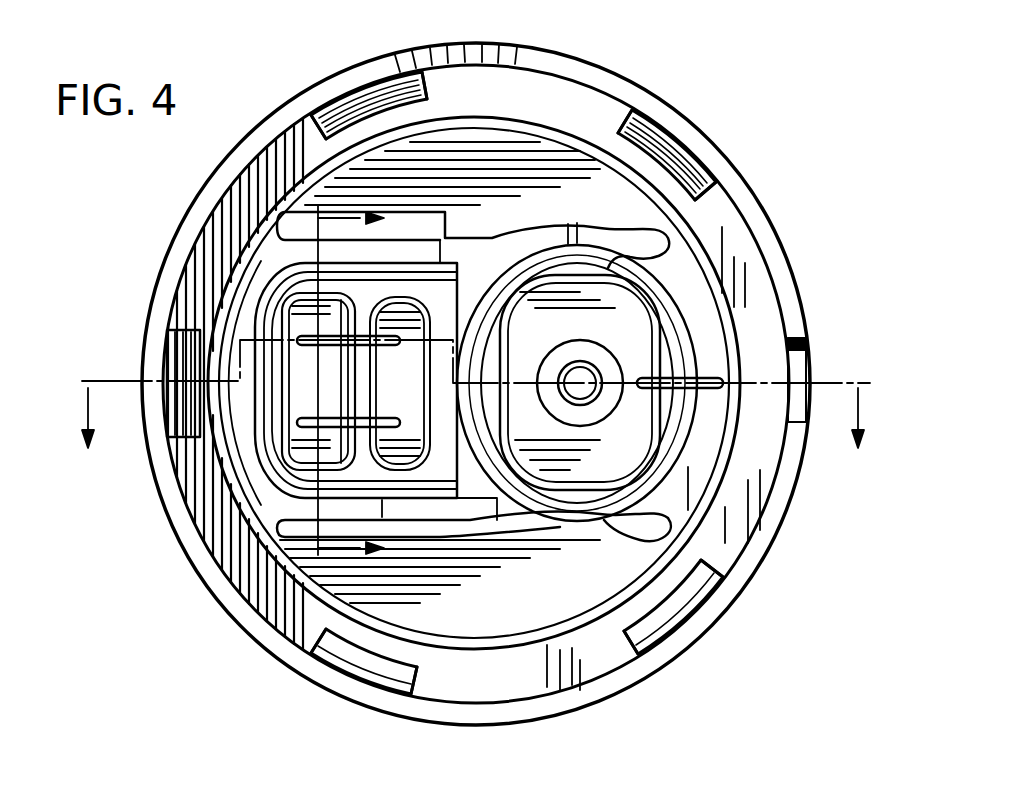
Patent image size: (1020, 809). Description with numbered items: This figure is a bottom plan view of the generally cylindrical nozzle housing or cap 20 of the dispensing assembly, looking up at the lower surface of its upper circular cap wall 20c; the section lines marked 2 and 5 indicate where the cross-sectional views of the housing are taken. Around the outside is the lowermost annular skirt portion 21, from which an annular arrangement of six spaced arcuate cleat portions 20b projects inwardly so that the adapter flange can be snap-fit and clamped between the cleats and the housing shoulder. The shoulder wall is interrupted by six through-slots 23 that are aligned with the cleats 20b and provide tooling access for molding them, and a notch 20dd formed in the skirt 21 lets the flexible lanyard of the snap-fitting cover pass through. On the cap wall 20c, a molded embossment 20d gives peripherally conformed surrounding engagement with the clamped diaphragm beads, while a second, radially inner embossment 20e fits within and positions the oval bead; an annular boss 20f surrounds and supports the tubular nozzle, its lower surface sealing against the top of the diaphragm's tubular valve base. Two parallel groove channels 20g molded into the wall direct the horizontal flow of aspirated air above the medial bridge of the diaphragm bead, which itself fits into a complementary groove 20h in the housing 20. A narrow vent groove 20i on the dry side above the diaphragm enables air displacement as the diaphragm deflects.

The nozzle housing 20 is at (175, 222).
The arcuate cleat portions 20b is at (340, 660).
The upper circular cap wall 20c is at (566, 192).
The molded embossment 20d is at (491, 253).
The notch 20dd is at (799, 360).
The radially inner embossment 20e is at (610, 304).
The annular boss 20f is at (590, 408).
The groove channels 20g is at (358, 372).
The groove 20h is at (379, 300).
The vent groove 20i is at (725, 385).
The annular skirt portion 21 is at (247, 598).
The through-slots 23 is at (410, 660).
The section line 2- 2 is at (474, 393).
The section line 5- 5 is at (351, 383).